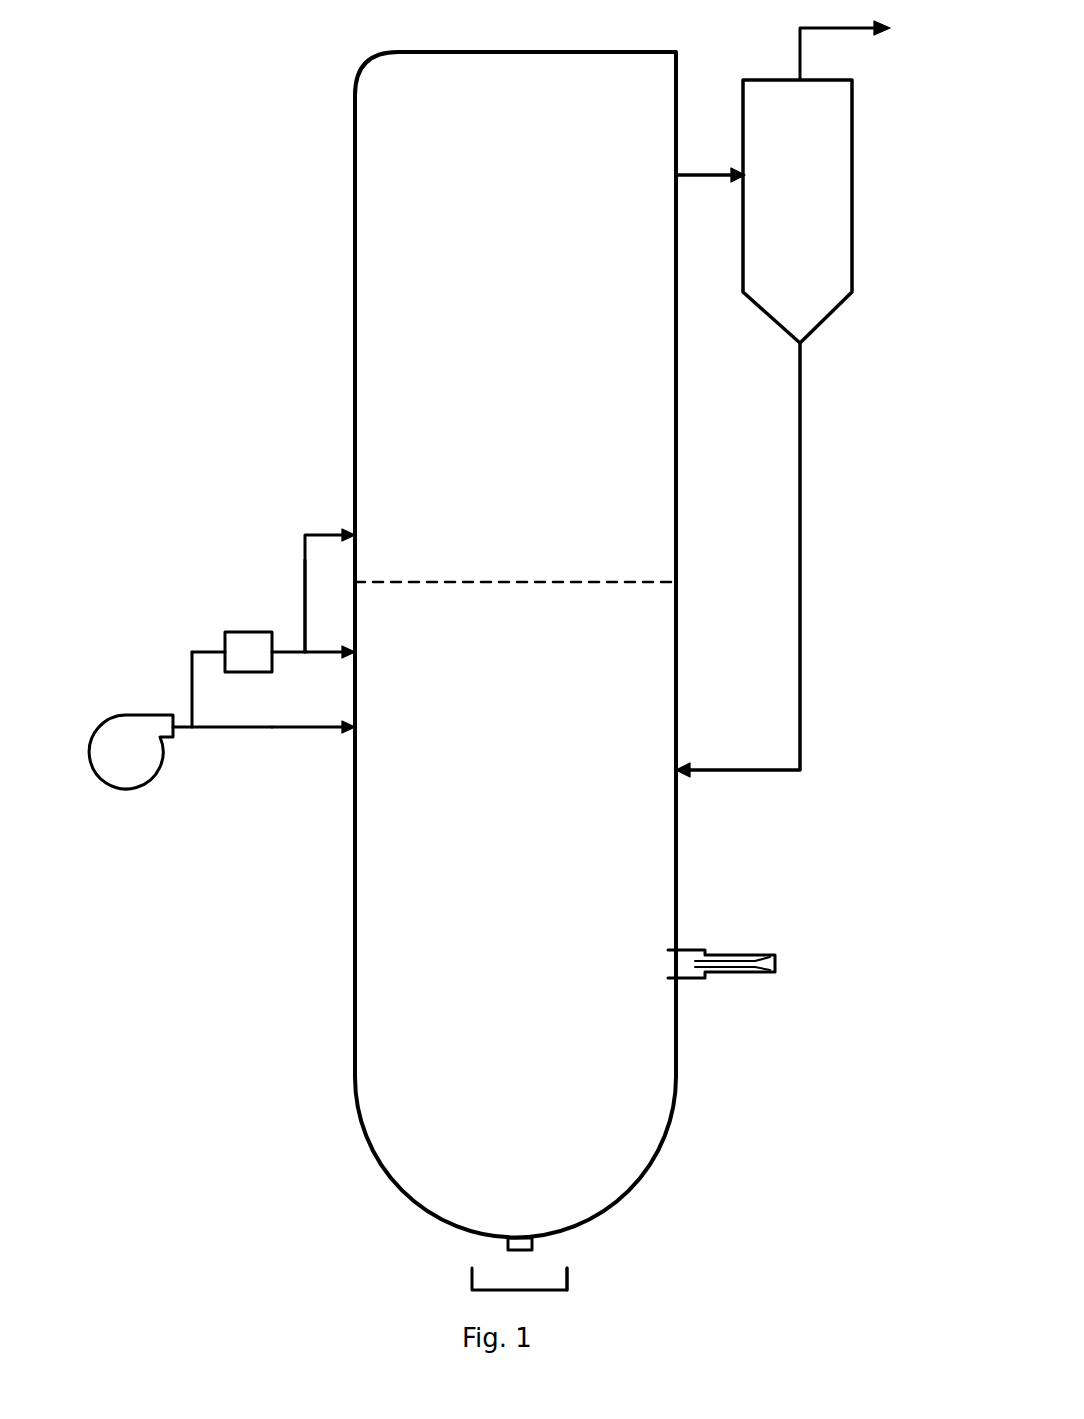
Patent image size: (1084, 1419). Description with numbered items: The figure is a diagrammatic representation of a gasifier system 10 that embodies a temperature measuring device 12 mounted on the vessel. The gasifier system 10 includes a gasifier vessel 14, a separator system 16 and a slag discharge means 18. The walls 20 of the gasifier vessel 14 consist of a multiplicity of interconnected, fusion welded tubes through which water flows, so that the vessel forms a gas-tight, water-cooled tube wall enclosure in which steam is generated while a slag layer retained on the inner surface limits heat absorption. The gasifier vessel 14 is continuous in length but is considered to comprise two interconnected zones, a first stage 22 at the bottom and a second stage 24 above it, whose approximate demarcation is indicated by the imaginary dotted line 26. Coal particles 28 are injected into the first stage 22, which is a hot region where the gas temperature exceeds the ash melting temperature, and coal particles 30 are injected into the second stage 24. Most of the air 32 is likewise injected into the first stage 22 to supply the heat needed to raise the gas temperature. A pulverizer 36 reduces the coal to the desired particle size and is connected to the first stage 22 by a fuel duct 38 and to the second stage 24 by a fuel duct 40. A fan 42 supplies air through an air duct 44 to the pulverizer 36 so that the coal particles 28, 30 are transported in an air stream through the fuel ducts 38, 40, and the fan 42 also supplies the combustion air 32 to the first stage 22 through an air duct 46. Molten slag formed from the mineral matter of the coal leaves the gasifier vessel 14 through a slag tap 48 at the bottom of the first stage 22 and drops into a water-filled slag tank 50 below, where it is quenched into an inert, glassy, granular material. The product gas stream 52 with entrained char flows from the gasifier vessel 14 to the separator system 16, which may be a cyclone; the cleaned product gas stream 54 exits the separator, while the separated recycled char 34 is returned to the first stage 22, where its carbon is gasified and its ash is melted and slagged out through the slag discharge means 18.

The gasifier system 10 is at (350, 354).
The temperature measuring device 12 is at (740, 940).
The gasifier vessel 14 is at (672, 536).
The separator system 16 is at (812, 199).
The slag discharge means 18 is at (578, 1268).
The walls 20 is at (360, 812).
The first stage 22 is at (532, 963).
The second stage 24 is at (542, 398).
The dotted line 26 is at (498, 580).
The coal particles 28 is at (345, 655).
The coal particles 30 is at (348, 528).
The air 32 is at (338, 728).
The recycled char 34 is at (694, 770).
The pulverizer 36 is at (250, 632).
The fuel duct 38 is at (290, 653).
The fuel duct 40 is at (305, 570).
The fan 42 is at (150, 780).
The air duct 44 is at (192, 682).
The air duct 46 is at (272, 728).
The slag tap 48 is at (532, 1243).
The slag tank 50 is at (470, 1276).
The product gas stream 52 is at (736, 168).
The product gas stream 54 is at (800, 47).